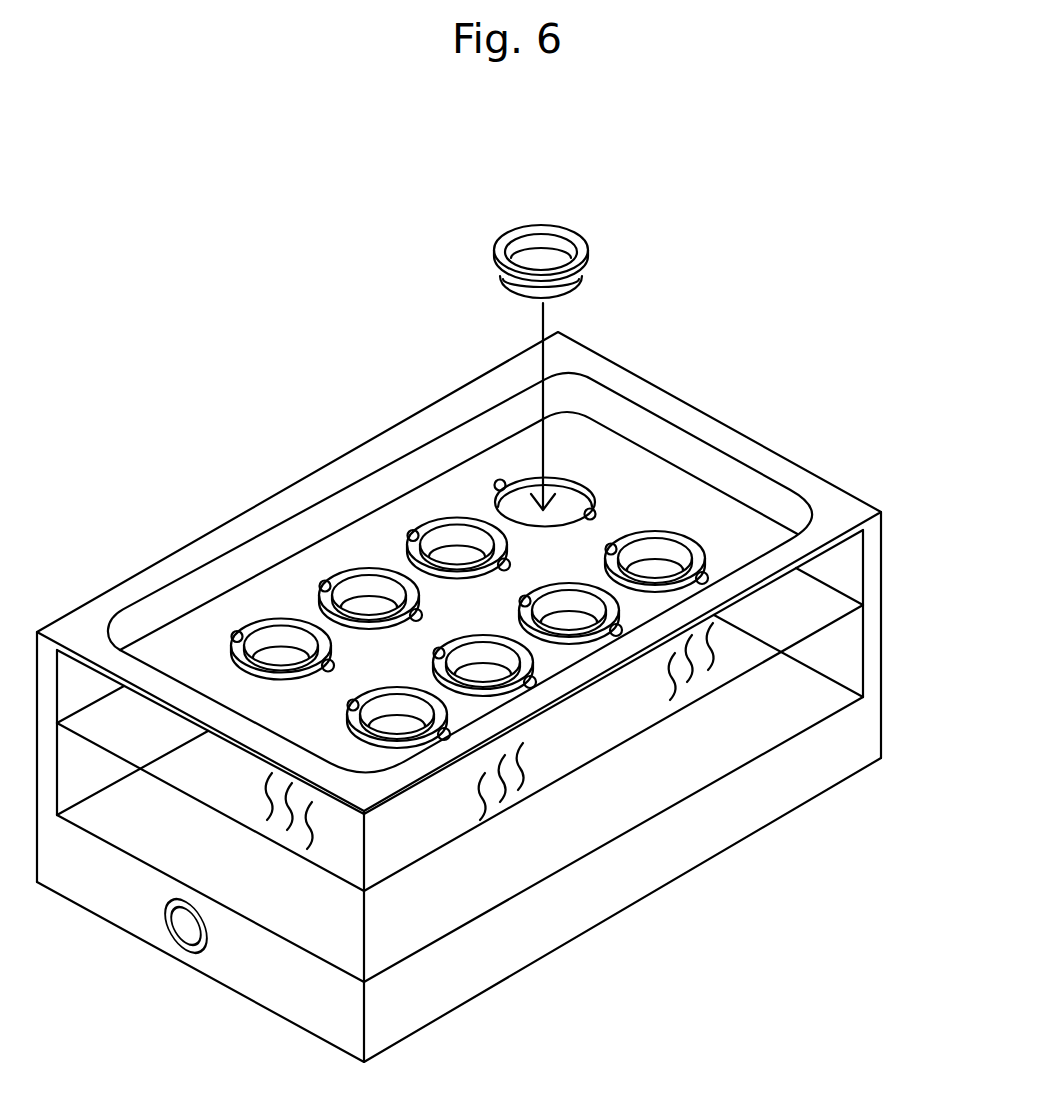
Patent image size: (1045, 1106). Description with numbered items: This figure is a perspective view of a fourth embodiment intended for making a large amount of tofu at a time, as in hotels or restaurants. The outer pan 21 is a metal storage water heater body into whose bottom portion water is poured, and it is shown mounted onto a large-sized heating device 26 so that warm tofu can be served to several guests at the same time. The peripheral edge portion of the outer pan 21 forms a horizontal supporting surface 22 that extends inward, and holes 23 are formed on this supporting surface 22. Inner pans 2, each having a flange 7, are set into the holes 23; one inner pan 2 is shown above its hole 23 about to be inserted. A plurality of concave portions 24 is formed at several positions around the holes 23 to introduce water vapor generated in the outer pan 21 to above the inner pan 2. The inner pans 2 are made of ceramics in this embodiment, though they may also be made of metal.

The flange 7 is at (571, 221).
The inner pan 2 is at (571, 301).
The outer pan 21 is at (482, 697).
The horizontal supporting surface 22 is at (460, 560).
The hole 23 is at (616, 419).
The concave portion 24 is at (640, 431).
The heating device 26 is at (459, 879).